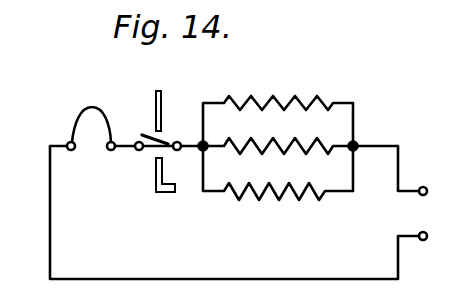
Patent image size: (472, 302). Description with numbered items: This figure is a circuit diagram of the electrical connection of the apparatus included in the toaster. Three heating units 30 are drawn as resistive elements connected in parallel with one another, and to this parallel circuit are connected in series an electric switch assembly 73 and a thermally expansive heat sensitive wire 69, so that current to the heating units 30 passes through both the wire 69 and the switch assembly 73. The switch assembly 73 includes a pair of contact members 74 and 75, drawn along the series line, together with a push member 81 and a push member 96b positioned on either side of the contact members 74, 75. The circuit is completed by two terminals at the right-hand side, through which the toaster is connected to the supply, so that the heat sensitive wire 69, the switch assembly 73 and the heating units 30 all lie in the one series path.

The thermally expansive heat sensitive wire 69 is at (78, 114).
The contact member 74 is at (145, 134).
The contact member 75 is at (136, 150).
The push member 81 is at (162, 108).
The electric switch assembly 73 is at (172, 135).
The push member 96b is at (153, 185).
The heating unit 30 is at (325, 100).